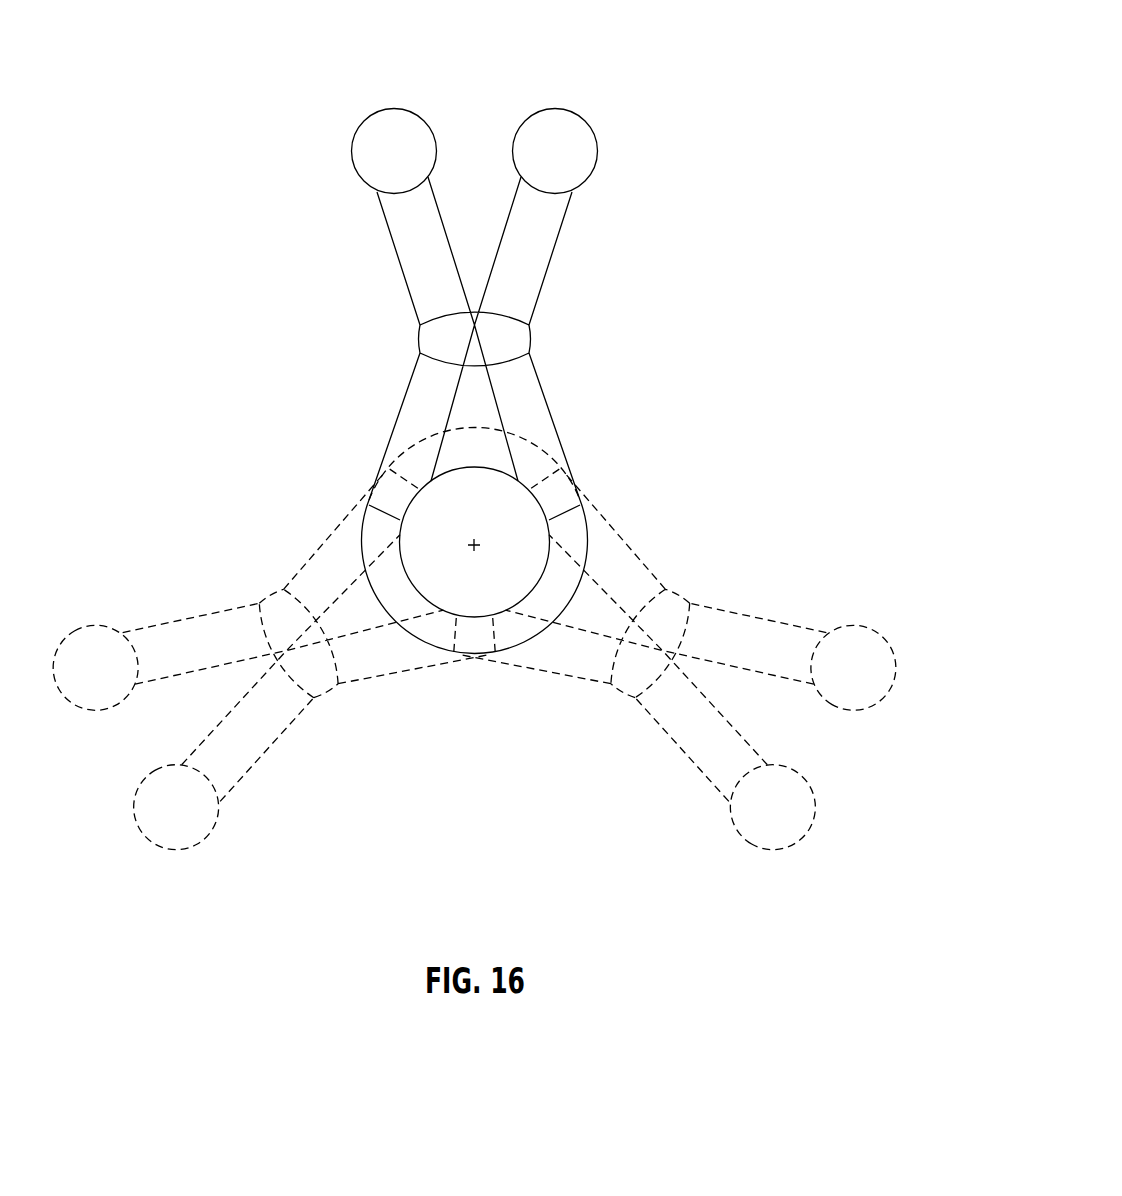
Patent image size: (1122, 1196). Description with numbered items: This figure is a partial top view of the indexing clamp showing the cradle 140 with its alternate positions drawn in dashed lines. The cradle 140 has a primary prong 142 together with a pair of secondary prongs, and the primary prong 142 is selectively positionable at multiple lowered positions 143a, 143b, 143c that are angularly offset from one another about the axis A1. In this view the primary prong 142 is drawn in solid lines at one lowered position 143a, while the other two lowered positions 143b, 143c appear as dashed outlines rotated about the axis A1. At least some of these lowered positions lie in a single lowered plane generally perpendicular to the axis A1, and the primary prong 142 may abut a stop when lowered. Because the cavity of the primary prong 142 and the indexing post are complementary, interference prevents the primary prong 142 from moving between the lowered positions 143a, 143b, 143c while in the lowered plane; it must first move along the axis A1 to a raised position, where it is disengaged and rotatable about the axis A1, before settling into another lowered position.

The cradle 140 is at (678, 40).
The lowered position 143a is at (504, 303).
The lowered position 143b is at (292, 518).
The lowered position 143c is at (769, 570).
The primary prong 142 is at (528, 537).
The axis A1 is at (473, 550).